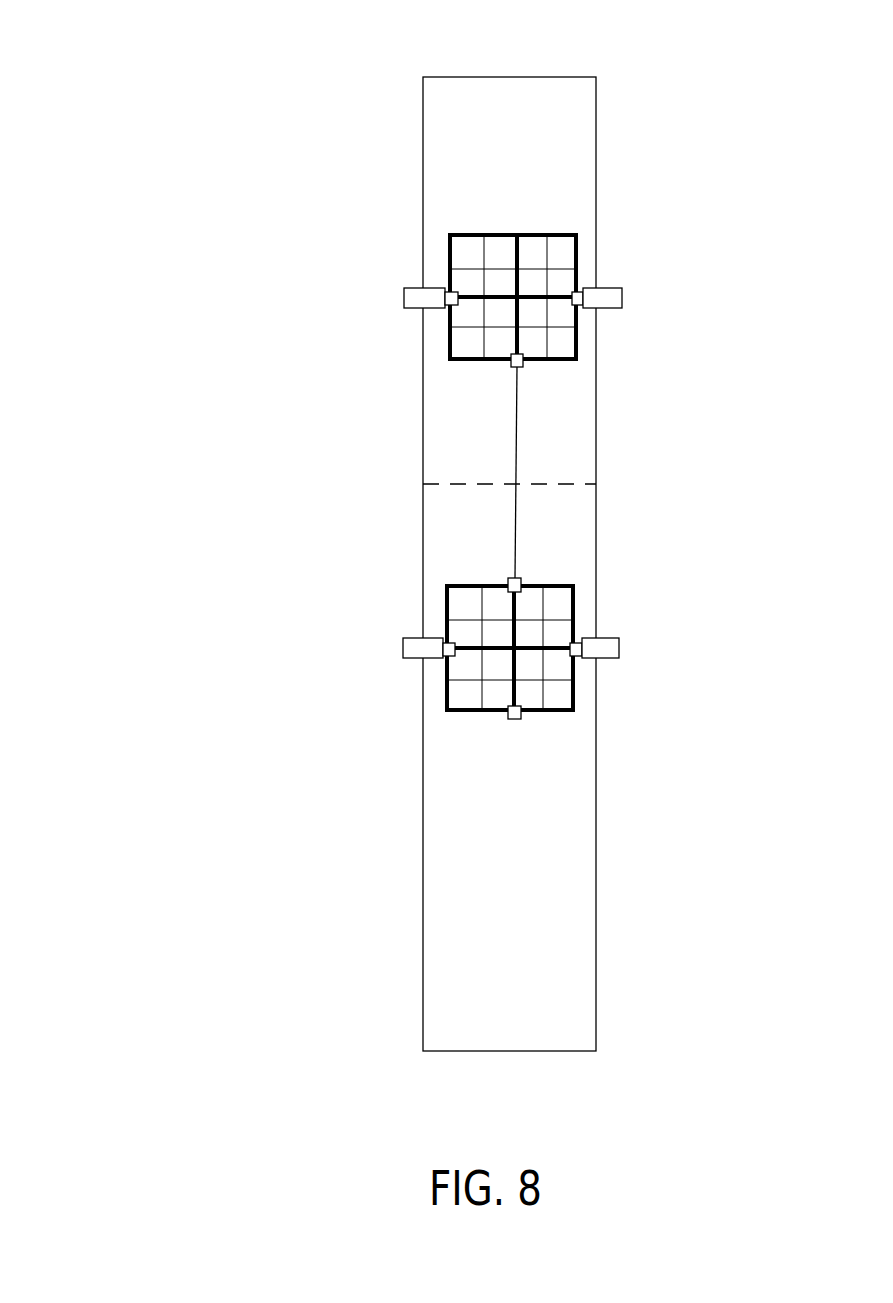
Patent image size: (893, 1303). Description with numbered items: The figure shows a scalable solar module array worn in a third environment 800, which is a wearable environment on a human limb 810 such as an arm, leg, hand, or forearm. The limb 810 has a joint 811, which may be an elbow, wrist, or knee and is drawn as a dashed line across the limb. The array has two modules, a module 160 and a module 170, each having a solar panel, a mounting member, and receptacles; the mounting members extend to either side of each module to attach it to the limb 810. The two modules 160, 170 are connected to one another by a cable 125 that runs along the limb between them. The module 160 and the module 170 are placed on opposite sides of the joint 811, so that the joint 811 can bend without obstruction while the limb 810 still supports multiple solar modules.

The third environment 800 is at (182, 111).
The limb 810 is at (597, 143).
The joint 811 is at (475, 485).
The module 160 is at (527, 248).
The module 170 is at (526, 702).
The cable 125 is at (518, 432).